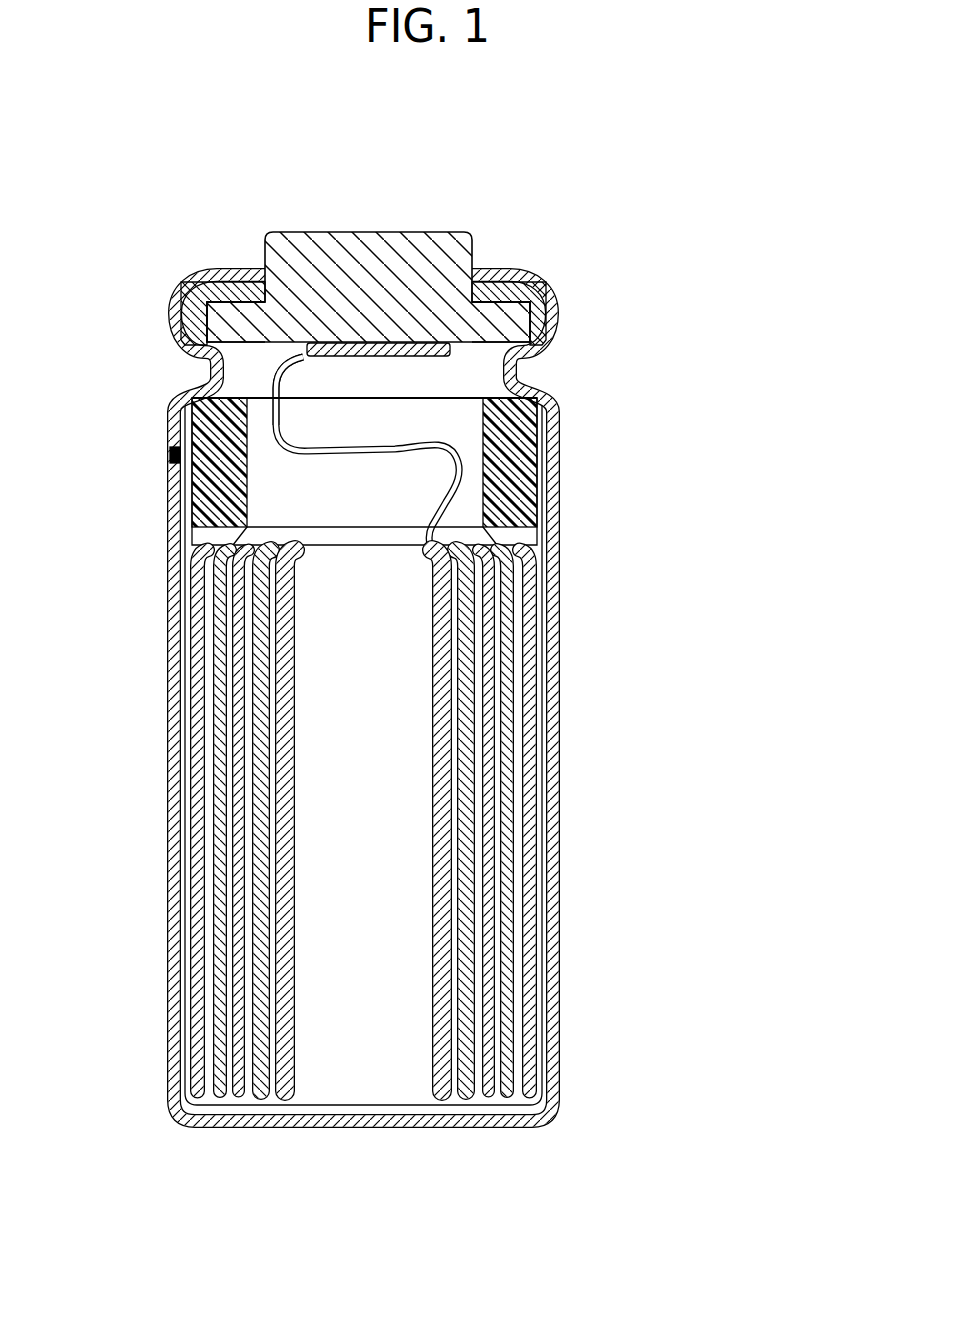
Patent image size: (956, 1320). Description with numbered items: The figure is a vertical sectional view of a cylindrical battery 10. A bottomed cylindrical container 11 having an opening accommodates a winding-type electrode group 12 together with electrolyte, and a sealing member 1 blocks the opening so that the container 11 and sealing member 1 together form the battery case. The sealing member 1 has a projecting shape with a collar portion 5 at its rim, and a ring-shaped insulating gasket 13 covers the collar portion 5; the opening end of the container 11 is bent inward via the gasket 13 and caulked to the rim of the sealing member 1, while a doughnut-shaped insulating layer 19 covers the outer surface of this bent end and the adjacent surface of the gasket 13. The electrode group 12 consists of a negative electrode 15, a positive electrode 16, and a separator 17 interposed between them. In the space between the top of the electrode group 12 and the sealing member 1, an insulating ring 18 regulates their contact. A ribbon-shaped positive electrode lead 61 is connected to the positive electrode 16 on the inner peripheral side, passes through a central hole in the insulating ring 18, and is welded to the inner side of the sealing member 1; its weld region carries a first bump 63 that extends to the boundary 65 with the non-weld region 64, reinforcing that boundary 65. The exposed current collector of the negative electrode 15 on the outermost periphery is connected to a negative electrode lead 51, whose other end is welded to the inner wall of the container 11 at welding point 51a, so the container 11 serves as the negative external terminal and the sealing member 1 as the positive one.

The sealing member 1 is at (372, 242).
The collar portion 5 is at (233, 312).
The cylindrical battery 10 is at (372, 690).
The container 11 is at (560, 432).
The electrode group 12 is at (440, 820).
The insulating gasket 13 is at (542, 322).
The negative electrode 15 is at (500, 718).
The positive electrode 16 is at (520, 792).
The separator 17 is at (533, 625).
The insulating ring 18 is at (512, 480).
The insulating layer 19 is at (183, 269).
The negative electrode lead 51 is at (361, 480).
The welding point 51a is at (160, 457).
The positive electrode lead 61 is at (370, 454).
The first bump 63 is at (413, 356).
The non-weld region 64 is at (296, 357).
The boundary 65 is at (238, 408).